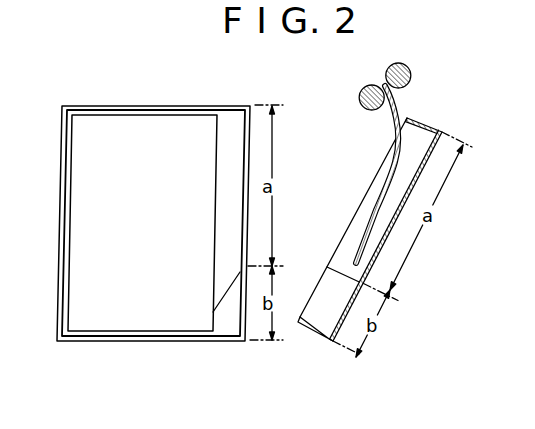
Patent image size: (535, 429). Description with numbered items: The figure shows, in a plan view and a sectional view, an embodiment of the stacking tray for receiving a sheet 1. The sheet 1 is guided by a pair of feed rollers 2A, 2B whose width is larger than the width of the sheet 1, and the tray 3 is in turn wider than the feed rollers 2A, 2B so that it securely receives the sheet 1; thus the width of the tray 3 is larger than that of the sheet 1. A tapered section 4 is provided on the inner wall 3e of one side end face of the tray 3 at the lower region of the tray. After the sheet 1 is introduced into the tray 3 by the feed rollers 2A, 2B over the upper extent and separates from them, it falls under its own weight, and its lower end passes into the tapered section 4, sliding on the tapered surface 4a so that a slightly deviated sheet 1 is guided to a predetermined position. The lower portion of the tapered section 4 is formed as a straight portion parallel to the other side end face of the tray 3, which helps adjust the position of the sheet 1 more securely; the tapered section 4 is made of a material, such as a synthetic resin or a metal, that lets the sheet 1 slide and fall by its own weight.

The sheet 1 is at (118, 136).
The feed roller 2A is at (358, 99).
The feed roller 2B is at (410, 78).
The tray 3 is at (200, 107).
The inner wall 3e is at (245, 112).
The tapered section 4 is at (227, 327).
The tapered surface 4a is at (228, 290).